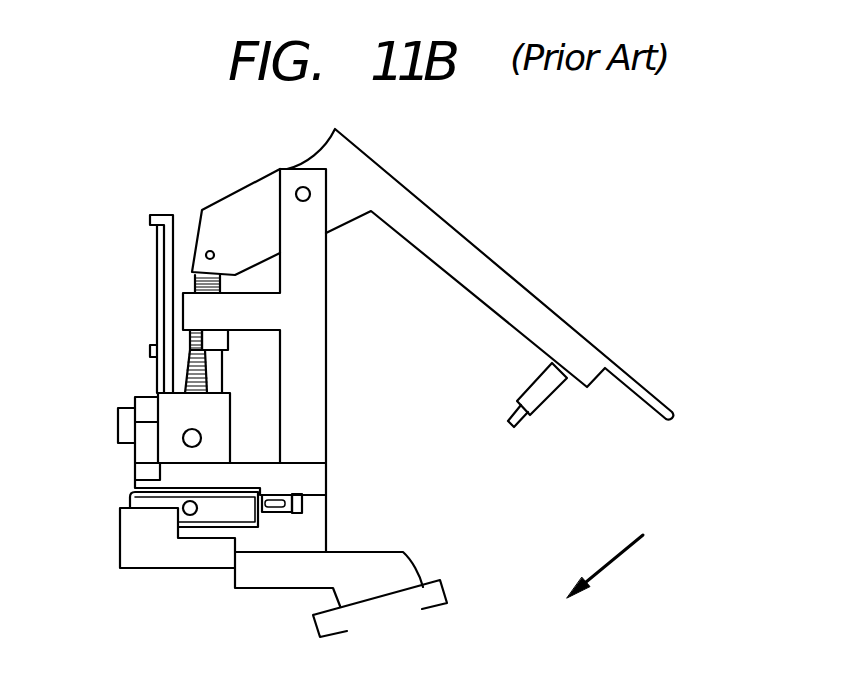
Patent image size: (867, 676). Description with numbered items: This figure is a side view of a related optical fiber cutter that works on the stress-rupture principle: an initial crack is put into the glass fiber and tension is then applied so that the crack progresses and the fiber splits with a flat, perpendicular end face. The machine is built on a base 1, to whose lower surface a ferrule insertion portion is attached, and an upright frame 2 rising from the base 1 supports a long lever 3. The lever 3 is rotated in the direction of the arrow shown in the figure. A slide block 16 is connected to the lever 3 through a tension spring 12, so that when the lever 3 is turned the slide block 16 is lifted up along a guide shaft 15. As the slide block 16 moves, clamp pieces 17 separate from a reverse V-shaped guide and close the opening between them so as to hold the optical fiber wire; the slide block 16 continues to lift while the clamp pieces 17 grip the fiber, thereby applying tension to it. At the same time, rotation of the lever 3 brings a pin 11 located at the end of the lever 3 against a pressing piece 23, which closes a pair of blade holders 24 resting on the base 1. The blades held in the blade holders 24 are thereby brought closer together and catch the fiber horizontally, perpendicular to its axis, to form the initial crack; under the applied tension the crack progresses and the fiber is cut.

The base 1 is at (317, 505).
The frame 2 is at (308, 313).
The lever 3 is at (507, 267).
The pin 11 is at (547, 398).
The tension spring 12 is at (187, 337).
The guide shaft 15 is at (217, 367).
The slide block 16 is at (218, 419).
The clamp pieces 17 is at (143, 400).
The pressing piece 23 is at (280, 508).
The blade holders 24 is at (215, 512).